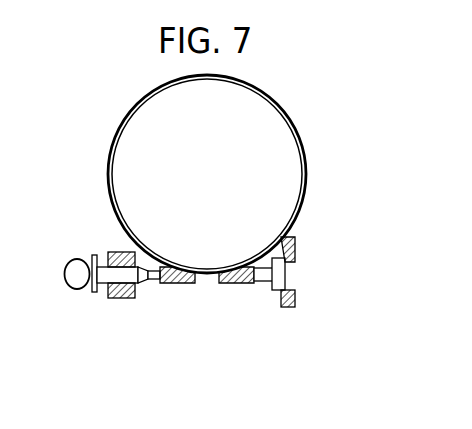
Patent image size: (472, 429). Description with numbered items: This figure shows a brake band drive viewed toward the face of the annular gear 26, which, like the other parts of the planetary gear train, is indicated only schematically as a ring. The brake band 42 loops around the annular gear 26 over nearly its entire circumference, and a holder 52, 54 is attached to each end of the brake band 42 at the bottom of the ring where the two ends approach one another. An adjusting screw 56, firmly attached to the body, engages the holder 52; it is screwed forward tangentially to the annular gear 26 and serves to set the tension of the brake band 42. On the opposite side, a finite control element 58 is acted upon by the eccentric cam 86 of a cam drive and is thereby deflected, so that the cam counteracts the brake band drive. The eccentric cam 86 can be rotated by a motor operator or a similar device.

The brake band 42 is at (284, 76).
The annular gear 26 is at (309, 126).
The eccentric cam 86 is at (73, 262).
The control element 58 is at (131, 312).
The holder 54 is at (172, 302).
The holder 52 is at (218, 302).
The adjusting screw 56 is at (312, 253).